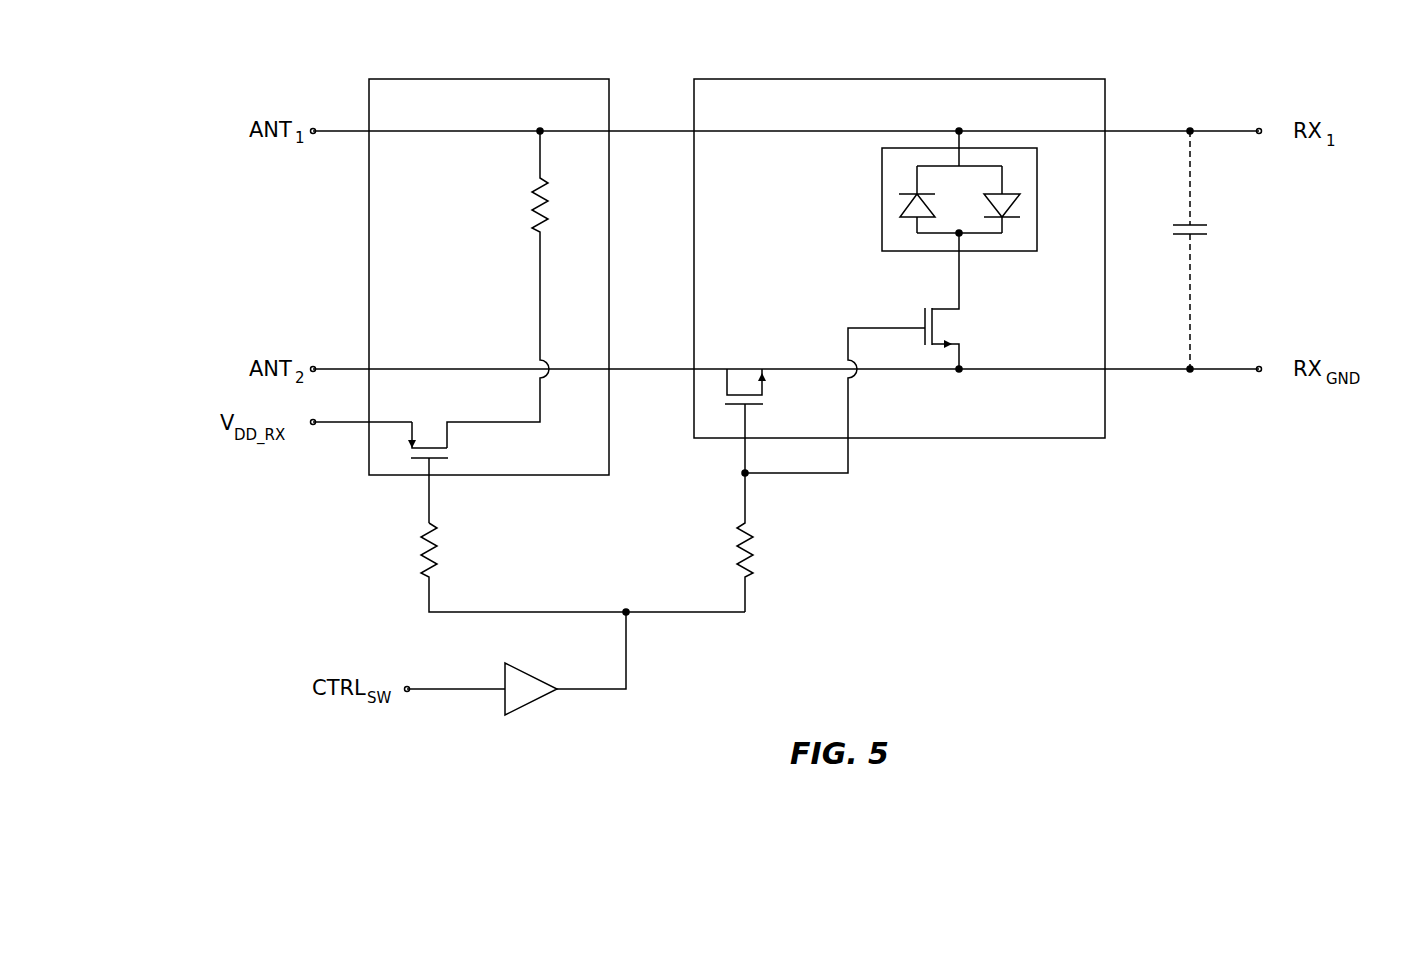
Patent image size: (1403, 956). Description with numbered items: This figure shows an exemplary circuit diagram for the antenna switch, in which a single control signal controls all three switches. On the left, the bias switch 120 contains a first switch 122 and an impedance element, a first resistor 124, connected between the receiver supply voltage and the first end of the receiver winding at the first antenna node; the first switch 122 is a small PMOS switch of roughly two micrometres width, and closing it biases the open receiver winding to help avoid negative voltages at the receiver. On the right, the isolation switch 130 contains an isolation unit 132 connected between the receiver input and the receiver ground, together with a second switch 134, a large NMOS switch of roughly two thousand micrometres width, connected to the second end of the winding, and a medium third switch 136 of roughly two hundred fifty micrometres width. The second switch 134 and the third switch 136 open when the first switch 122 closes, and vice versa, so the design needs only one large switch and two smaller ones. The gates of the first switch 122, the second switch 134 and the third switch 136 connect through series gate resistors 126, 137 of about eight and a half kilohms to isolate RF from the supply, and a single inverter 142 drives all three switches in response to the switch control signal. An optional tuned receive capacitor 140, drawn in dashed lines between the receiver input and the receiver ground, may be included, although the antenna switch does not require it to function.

The bias switch 120 is at (538, 79).
The isolation switch 130 is at (1032, 79).
The resistor R1 124 is at (542, 187).
The switch SW1 122 is at (450, 437).
The gate resistor 126 is at (439, 540).
The isolation unit 132 is at (862, 173).
The switch SW2 134 is at (766, 391).
The switch SW3 136 is at (949, 307).
The gate resistor 137 is at (756, 538).
The tuned capacitor CRX 140 is at (1186, 222).
The inverter 142 is at (527, 672).